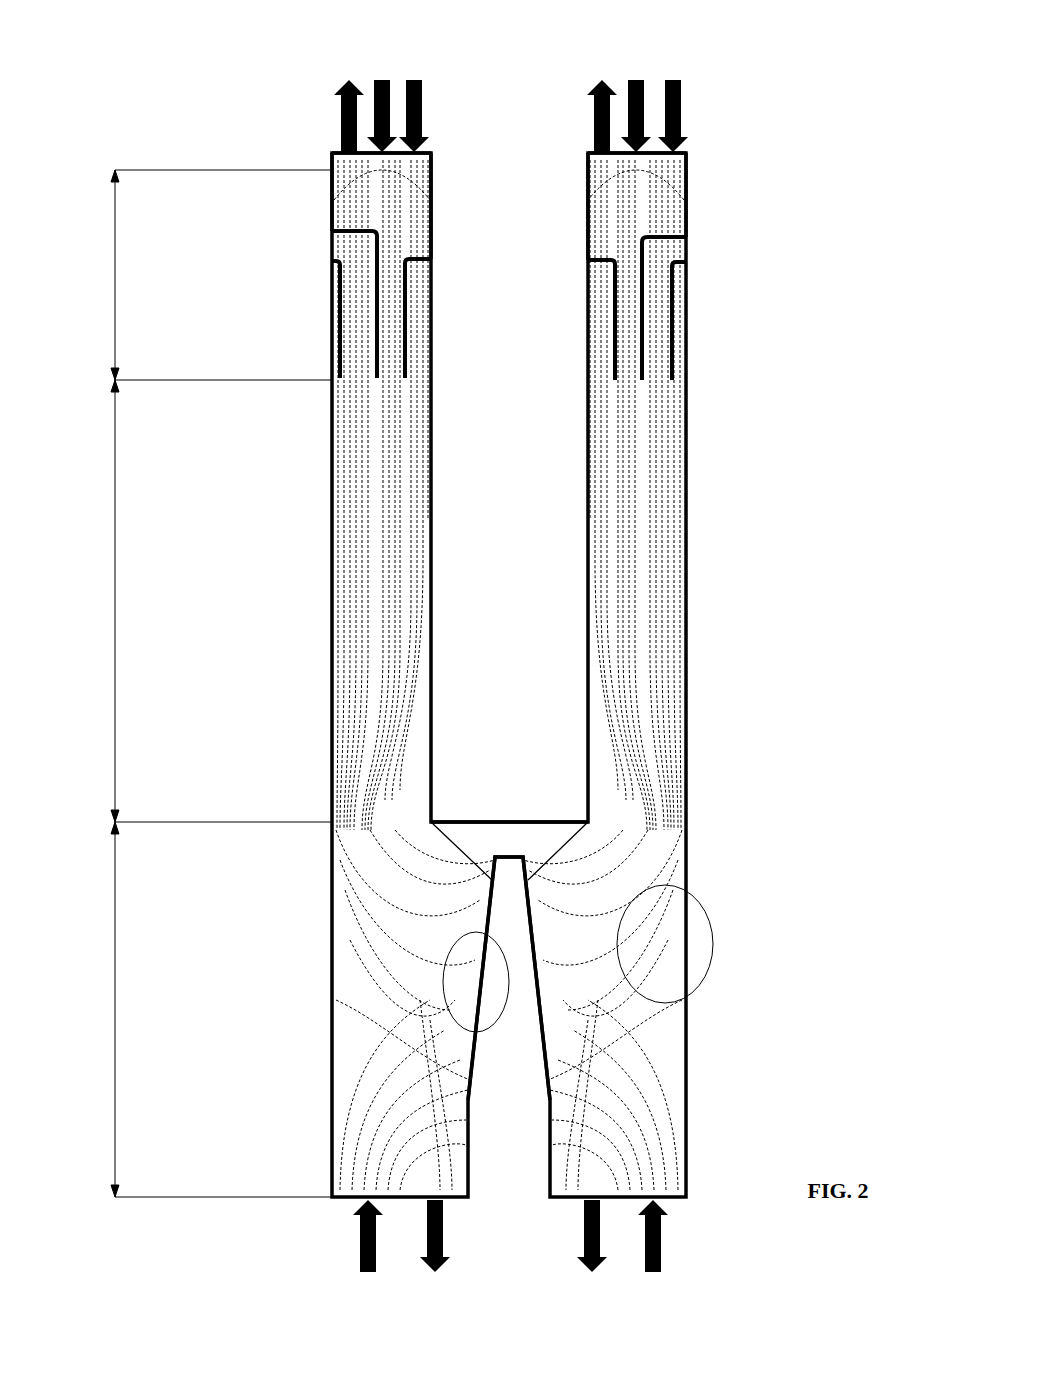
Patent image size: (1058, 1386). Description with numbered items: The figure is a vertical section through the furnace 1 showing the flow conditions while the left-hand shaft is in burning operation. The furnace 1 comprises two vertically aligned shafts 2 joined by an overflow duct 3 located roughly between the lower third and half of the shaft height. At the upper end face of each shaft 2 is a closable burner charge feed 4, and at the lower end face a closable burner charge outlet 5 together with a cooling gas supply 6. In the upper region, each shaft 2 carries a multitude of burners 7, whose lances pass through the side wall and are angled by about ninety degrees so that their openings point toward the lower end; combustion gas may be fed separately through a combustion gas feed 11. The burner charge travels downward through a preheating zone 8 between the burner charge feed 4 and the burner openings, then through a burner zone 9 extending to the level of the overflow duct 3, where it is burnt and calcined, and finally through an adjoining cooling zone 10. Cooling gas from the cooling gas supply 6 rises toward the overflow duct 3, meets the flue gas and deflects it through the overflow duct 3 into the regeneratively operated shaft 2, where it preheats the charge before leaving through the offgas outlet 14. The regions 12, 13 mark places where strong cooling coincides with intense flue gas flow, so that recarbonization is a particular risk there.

The furnace 1 is at (237, 97).
The shaft 2 is at (583, 148).
The overflow duct 3 is at (512, 838).
The burner charge feed 4 is at (509, 93).
The burner charge outlet 5 is at (513, 1236).
The cooling gas supply 6 is at (511, 1236).
The burners 7 is at (340, 285).
The preheating zone 8 is at (201, 275).
The burner zone 9 is at (201, 601).
The cooling zone 10 is at (201, 1009).
The combustion gas feed 11 is at (557, 93).
The region 12 is at (465, 975).
The region 13 is at (655, 957).
The offgas outlet 14 is at (460, 93).